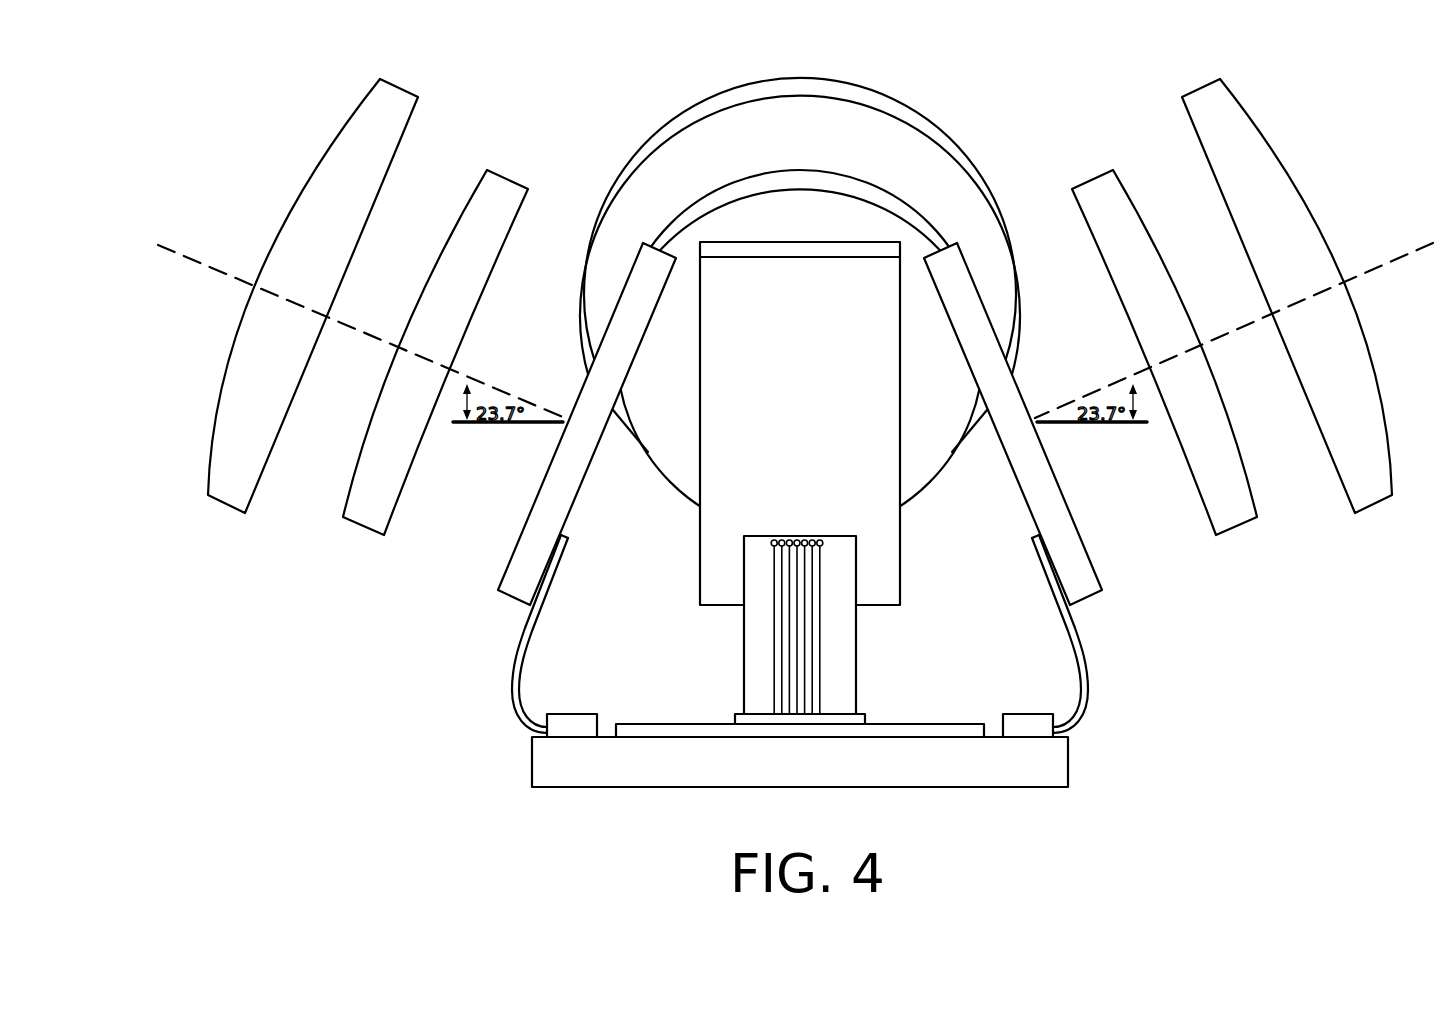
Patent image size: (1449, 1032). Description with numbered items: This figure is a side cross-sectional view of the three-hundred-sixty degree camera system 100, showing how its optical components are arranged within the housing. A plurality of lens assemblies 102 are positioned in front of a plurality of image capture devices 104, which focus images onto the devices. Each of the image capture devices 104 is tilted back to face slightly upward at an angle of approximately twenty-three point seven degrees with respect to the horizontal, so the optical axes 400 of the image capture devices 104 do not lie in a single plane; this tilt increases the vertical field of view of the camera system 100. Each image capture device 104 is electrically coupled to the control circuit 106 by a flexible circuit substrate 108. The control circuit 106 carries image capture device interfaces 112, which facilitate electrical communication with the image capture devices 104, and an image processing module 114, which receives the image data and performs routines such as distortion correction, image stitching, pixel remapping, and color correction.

The camera system 100 is at (222, 113).
The lens assembly 102 is at (236, 197).
The image capture device 104 is at (523, 562).
The control circuit 106 is at (645, 773).
The flexible circuit substrate 108 is at (512, 662).
The image capture device interface 112 is at (570, 718).
The image processing module 114 is at (958, 724).
The optical axis 400 is at (181, 254).